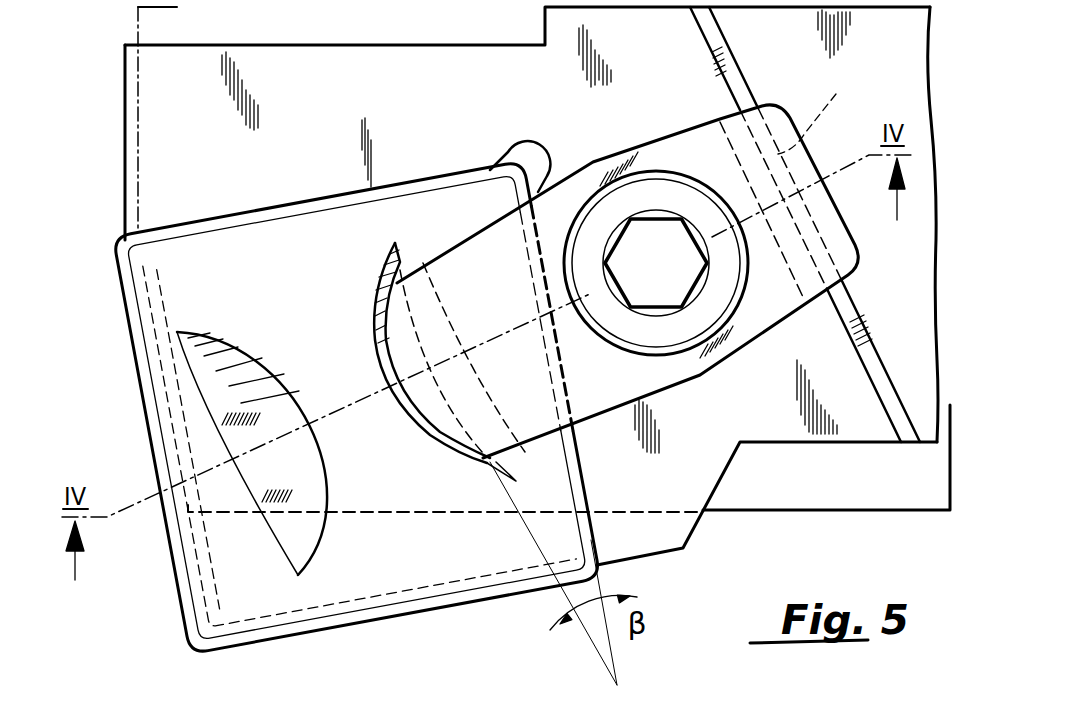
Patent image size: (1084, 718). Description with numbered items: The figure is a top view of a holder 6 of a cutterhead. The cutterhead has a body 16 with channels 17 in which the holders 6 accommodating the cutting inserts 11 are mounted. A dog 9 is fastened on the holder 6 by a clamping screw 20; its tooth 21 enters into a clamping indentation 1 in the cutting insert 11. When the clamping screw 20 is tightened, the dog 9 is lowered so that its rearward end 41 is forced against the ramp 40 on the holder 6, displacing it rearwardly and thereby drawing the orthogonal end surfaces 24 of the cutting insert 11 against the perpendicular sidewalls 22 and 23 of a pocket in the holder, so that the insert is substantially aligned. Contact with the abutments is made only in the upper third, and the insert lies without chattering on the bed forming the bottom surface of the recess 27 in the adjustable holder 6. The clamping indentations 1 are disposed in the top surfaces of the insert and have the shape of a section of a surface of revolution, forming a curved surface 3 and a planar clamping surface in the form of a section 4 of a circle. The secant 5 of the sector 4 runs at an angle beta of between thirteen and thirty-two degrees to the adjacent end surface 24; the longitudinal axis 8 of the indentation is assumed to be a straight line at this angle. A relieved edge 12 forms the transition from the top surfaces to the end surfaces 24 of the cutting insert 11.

The clamping indentation 1 is at (380, 257).
The curved surface 3 is at (497, 470).
The section of a circle 4 is at (452, 381).
The secant 5 is at (280, 543).
The longitudinal axis 8 is at (522, 495).
The holder 6 is at (155, 100).
The dog 9 is at (470, 225).
The cutting insert 11 is at (132, 432).
The relieved edge 12 is at (180, 587).
The body 16 is at (150, 22).
The channel 17 is at (795, 482).
The clamping screw 20 is at (657, 193).
The tooth 21 is at (425, 333).
The sidewall 22 is at (288, 214).
The sidewall 23 is at (474, 357).
The end surface 24 is at (128, 385).
The recess 27 is at (515, 157).
The ramp 40 is at (884, 356).
The rearward end 41 is at (817, 109).